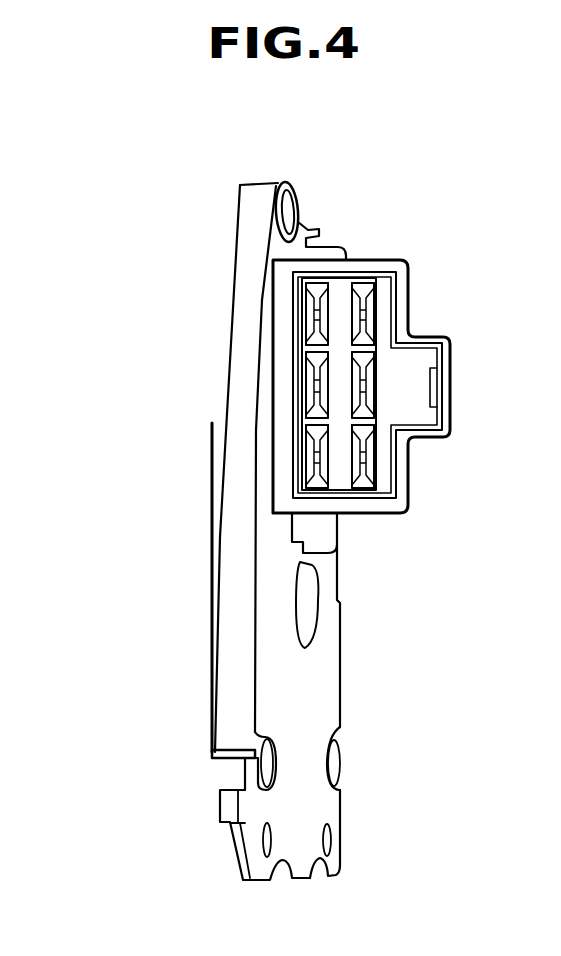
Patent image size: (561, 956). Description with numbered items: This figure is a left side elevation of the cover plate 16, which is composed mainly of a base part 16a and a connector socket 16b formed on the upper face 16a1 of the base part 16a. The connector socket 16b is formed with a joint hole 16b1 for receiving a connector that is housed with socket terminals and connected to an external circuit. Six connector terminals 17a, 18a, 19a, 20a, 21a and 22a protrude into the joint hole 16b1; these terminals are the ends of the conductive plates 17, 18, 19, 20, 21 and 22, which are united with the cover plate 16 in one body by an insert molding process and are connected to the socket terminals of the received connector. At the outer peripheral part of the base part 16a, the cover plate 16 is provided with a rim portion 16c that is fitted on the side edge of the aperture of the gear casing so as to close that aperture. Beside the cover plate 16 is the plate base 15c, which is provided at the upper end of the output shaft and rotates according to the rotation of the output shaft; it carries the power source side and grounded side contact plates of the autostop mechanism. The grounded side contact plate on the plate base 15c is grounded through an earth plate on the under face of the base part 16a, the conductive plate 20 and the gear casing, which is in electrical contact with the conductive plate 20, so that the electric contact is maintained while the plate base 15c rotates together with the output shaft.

The plate base 15c is at (253, 712).
The cover plate 16 is at (300, 210).
The base part 16a is at (305, 705).
The upper face 16a1 is at (285, 523).
The connector socket 16b is at (406, 482).
The joint hole 16b1 is at (383, 277).
The rim portion 16c is at (236, 855).
The conductive plate 17 is at (372, 314).
The connector terminal 17a is at (372, 328).
The conductive plate 18 is at (372, 398).
The connector terminal 18a is at (372, 376).
The conductive plate 19 is at (372, 465).
The connector terminal 19a is at (372, 453).
The conductive plate 20 is at (310, 328).
The connector terminal 20a is at (310, 320).
The conductive plate 21 is at (310, 402).
The connector terminal 21a is at (310, 396).
The conductive plate 22 is at (310, 448).
The connector terminal 22a is at (310, 467).